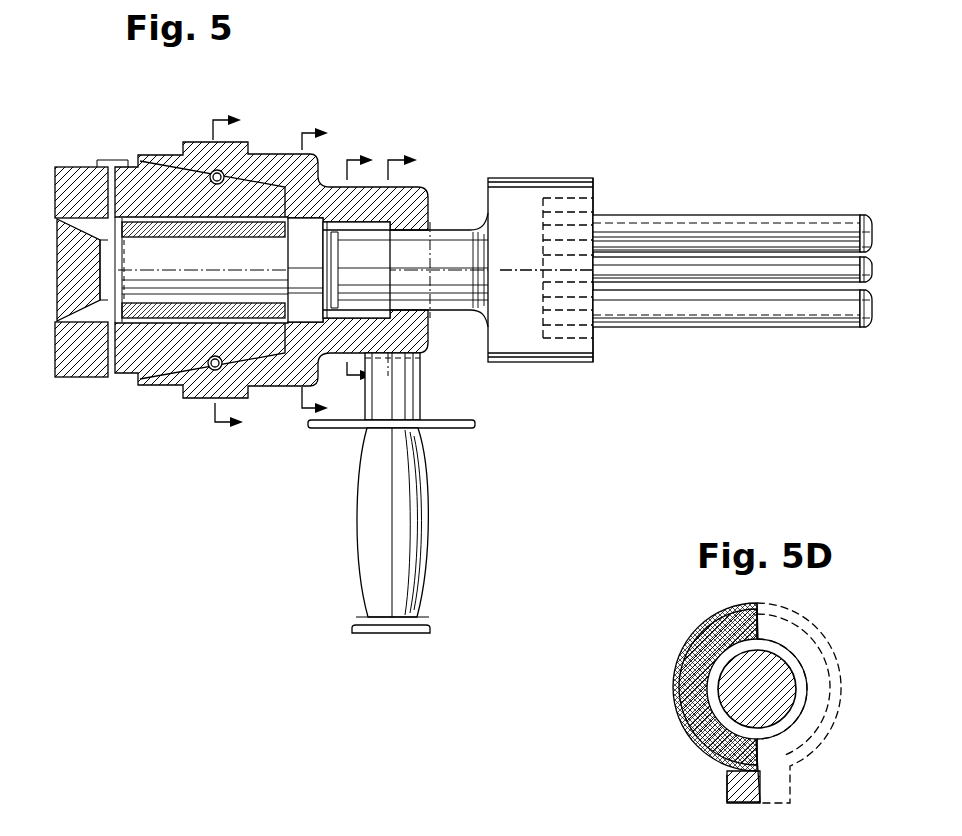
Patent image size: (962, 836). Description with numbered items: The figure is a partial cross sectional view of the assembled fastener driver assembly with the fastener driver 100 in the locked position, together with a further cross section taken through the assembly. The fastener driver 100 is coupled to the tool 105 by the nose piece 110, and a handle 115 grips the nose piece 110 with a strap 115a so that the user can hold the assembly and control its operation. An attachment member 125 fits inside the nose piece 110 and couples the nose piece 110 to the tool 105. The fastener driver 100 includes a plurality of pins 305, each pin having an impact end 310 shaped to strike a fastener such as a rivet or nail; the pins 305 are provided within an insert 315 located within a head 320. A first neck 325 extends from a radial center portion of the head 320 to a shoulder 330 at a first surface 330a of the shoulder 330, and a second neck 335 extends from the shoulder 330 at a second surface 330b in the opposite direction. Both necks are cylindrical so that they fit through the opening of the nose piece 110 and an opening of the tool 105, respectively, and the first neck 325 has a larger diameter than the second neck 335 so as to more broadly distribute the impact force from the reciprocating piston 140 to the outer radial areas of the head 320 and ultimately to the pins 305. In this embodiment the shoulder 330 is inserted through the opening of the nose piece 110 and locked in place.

In FIG. 5, the fastener driver 100 is at (713, 133).
In FIG. 5, the tool 105 is at (70, 162).
In FIG. 5, the nose piece 110 is at (232, 440).
In FIG. 5, the handle 115 is at (427, 513).
In FIG. 5D, the handle 115 is at (728, 783).
In FIG. 5, the strap 115a is at (452, 243).
In FIG. 5, the attachment member 125 is at (253, 243).
In FIG. 5, the reciprocating piston 140 is at (82, 270).
In FIG. 5, the pins 305 is at (870, 215).
In FIG. 5, the impact end 310 is at (775, 222).
In FIG. 5, the insert 315 is at (597, 193).
In FIG. 5, the head 320 is at (534, 178).
In FIG. 5, the first neck 325 is at (481, 232).
In FIG. 5D, the first neck 325 is at (797, 668).
In FIG. 5, the shoulder 330 is at (305, 315).
In FIG. 5, the first surface of the shoulder 330a is at (323, 255).
In FIG. 5, the second surface of the shoulder 330b is at (285, 257).
In FIG. 5, the second neck 335 is at (148, 258).